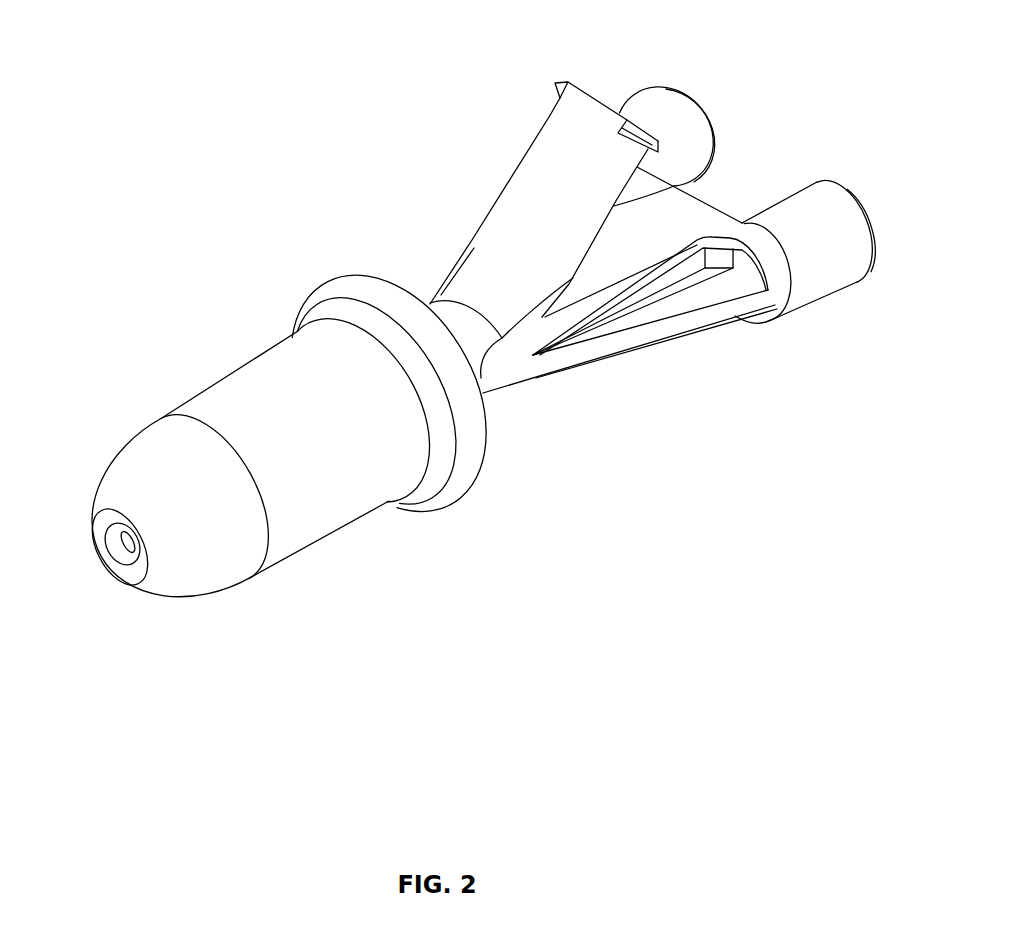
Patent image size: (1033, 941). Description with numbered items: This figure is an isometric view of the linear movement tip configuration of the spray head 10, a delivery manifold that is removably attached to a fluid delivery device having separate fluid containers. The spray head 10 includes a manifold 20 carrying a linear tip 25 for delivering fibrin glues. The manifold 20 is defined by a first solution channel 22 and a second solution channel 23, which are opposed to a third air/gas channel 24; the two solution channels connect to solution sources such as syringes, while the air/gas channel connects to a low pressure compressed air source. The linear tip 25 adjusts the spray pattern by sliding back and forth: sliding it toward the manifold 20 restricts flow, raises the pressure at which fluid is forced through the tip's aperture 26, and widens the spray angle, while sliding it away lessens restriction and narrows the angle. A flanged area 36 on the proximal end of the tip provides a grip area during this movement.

The spray head 10 is at (357, 189).
The manifold 20 is at (610, 347).
The first solution channel 22 is at (708, 142).
The second solution channel 23 is at (852, 190).
The air/gas channel 24 is at (586, 85).
The linear tip 25 is at (93, 490).
The orifice 26 is at (124, 548).
The flanged area 36 is at (462, 498).